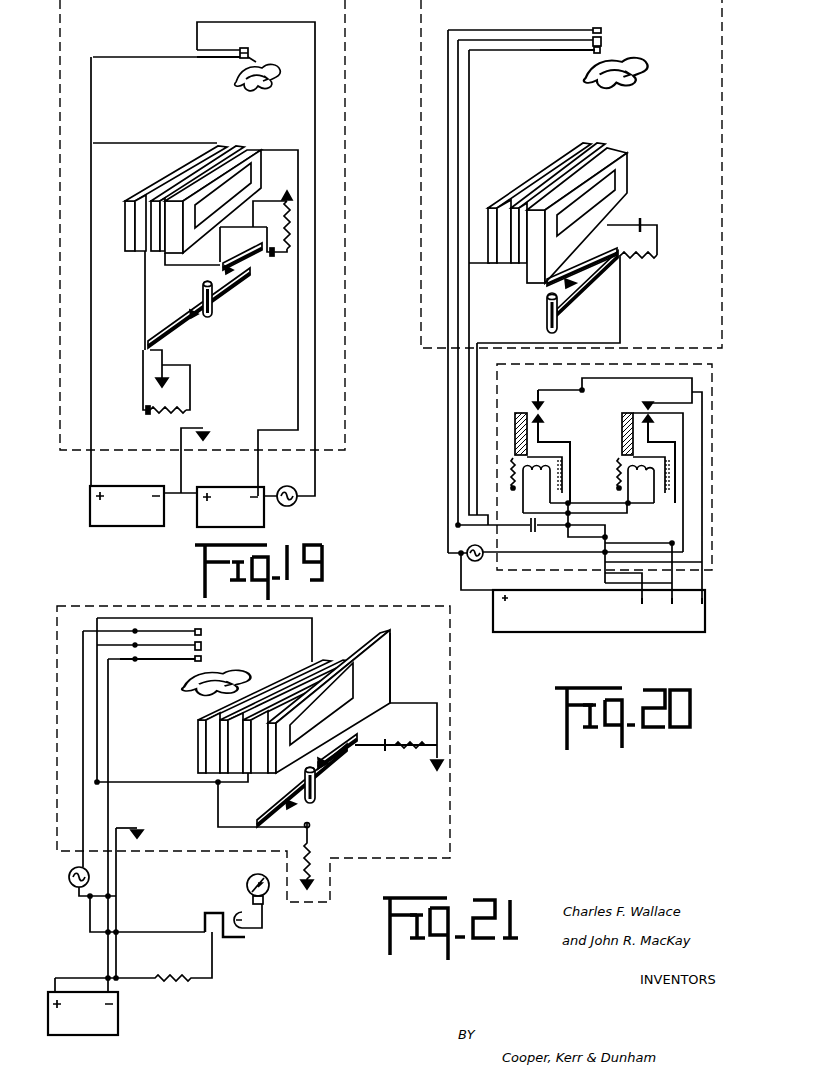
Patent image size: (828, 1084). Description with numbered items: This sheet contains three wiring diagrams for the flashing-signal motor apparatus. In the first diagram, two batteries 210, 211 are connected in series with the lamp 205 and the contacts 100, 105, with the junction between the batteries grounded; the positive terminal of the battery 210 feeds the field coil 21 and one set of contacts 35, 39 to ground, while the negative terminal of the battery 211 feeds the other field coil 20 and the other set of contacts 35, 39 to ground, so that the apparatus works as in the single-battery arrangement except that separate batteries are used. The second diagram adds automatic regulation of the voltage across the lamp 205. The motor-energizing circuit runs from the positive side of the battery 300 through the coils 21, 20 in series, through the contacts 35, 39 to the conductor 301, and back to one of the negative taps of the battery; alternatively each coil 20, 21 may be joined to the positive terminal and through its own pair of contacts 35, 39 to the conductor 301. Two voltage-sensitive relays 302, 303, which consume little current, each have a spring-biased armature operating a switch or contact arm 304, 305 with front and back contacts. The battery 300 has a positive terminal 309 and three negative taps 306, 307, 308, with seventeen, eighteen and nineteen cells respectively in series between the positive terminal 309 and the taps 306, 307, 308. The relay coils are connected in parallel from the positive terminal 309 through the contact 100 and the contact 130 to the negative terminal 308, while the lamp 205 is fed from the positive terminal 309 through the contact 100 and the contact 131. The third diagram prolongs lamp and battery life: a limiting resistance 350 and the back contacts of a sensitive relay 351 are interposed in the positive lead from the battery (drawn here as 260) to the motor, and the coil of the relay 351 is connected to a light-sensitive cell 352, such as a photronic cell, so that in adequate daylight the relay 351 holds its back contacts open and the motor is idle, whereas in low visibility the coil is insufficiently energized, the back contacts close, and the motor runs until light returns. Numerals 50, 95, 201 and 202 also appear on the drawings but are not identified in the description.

In FIG. 19, the field coil 20 is at (245, 152).
In FIG. 20, the field coil 20 is at (612, 162).
In FIG. 21, the field coil 20 is at (338, 662).
In FIG. 19, the field coil 21 is at (140, 227).
In FIG. 20, the field coil 21 is at (502, 233).
In FIG. 21, the field coil 21 is at (213, 751).
In FIG. 19, the contact 35 is at (233, 279).
In FIG. 20, the contact 35 is at (582, 291).
In FIG. 21, the contact 35 is at (292, 797).
In FIG. 19, the contact 39 is at (228, 268).
In FIG. 20, the contact 39 is at (566, 284).
In FIG. 21, the contact 39 is at (322, 760).
In FIG. 19, the contact pin 50 is at (215, 310).
In FIG. 20, the contact pin 50 is at (559, 326).
In FIG. 21, the contact pin 50 is at (316, 798).
In FIG. 19, the radiant energy 95 is at (276, 72).
In FIG. 20, the radiant energy 95 is at (648, 72).
In FIG. 21, the radiant energy 95 is at (198, 684).
In FIG. 19, the contact 100 is at (215, 58).
In FIG. 20, the contact 100 is at (598, 52).
In FIG. 21, the contact 100 is at (158, 660).
In FIG. 19, the contact 105 is at (248, 50).
In FIG. 20, the contact 130 is at (603, 41).
In FIG. 21, the contact 130 is at (203, 648).
In FIG. 20, the contact 131 is at (602, 32).
In FIG. 21, the contact 131 is at (203, 633).
In FIG. 19, the resistor 201 is at (285, 228).
In FIG. 20, the resistor 201 is at (636, 258).
In FIG. 21, the resistor 201 is at (405, 750).
In FIG. 19, the switch 202 is at (273, 257).
In FIG. 20, the switch 202 is at (641, 222).
In FIG. 21, the switch 202 is at (387, 742).
In FIG. 19, the lamp 205 is at (298, 495).
In FIG. 20, the lamp 205 is at (474, 561).
In FIG. 21, the lamp 205 is at (67, 881).
In FIG. 19, the battery 210 is at (108, 505).
In FIG. 19, the battery 211 is at (210, 508).
In FIG. 21, the battery 260 is at (77, 1018).
In FIG. 20, the battery 300 is at (590, 618).
In FIG. 20, the conductor 301 is at (620, 312).
In FIG. 20, the relay 302 is at (530, 460).
In FIG. 20, the relay 303 is at (637, 467).
In FIG. 20, the switch or contact arm 304 is at (557, 411).
In FIG. 20, the switch or contact arm 305 is at (676, 413).
In FIG. 20, the negative tap 306 is at (643, 604).
In FIG. 20, the negative tap 307 is at (673, 604).
In FIG. 20, the negative tap 308 is at (704, 612).
In FIG. 20, the positive terminal 309 is at (508, 600).
In FIG. 21, the limiting resistance 350 is at (172, 980).
In FIG. 21, the sensitive relay 351 is at (236, 940).
In FIG. 21, the light-sensitive cell 352 is at (247, 882).